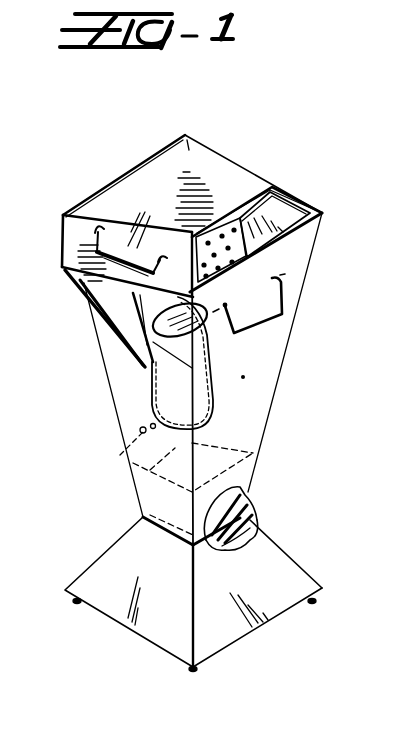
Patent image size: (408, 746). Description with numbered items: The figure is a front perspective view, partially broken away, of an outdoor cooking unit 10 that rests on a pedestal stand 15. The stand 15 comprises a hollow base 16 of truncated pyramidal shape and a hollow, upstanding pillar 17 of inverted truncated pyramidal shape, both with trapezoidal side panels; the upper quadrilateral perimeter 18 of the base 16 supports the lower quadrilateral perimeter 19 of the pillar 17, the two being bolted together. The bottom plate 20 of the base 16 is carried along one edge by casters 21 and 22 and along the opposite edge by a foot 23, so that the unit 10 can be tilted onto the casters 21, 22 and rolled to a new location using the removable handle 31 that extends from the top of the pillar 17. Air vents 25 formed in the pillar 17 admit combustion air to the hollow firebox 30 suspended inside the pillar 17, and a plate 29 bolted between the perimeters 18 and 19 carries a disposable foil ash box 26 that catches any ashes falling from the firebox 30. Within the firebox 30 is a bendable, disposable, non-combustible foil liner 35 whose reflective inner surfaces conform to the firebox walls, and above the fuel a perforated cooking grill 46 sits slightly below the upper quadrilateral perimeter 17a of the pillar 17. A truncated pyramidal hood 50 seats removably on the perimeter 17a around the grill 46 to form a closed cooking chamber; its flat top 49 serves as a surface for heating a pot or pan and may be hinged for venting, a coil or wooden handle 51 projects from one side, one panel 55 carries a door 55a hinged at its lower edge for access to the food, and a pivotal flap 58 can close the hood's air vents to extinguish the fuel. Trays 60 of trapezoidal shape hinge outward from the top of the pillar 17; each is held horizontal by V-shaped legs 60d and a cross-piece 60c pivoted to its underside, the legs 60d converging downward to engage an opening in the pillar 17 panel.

The outdoor cooking unit 10 is at (274, 133).
The pedestal stand 15 is at (287, 373).
The hollow base 16 is at (95, 563).
The hollow pillar 17 is at (117, 431).
The upper quadrilateral perimeter of the pillar 17a is at (62, 225).
The upper quadrilateral perimeter of the base 18 is at (259, 541).
The lower quadrilateral perimeter of the pillar 19 is at (246, 505).
The bottom plate 20 is at (243, 640).
The caster 21 is at (78, 603).
The caster 22 is at (193, 672).
The foot 23 is at (312, 604).
The air vents 25 is at (146, 462).
The disposable ash box 26 is at (256, 457).
The plate 29 is at (142, 521).
The firebox 30 is at (214, 378).
The removable handle 31 is at (282, 320).
The foil liner 35 is at (216, 334).
The cooking grill 46 is at (205, 236).
The flat top 49 is at (186, 134).
The hood 50 is at (79, 185).
The handle 51 is at (93, 243).
The panel of the hood 55 is at (296, 203).
The door 55a is at (280, 207).
The pivotal flap 58 is at (95, 190).
The tray 60 is at (68, 256).
The cross-piece 60c is at (122, 337).
The legs 60d is at (90, 309).